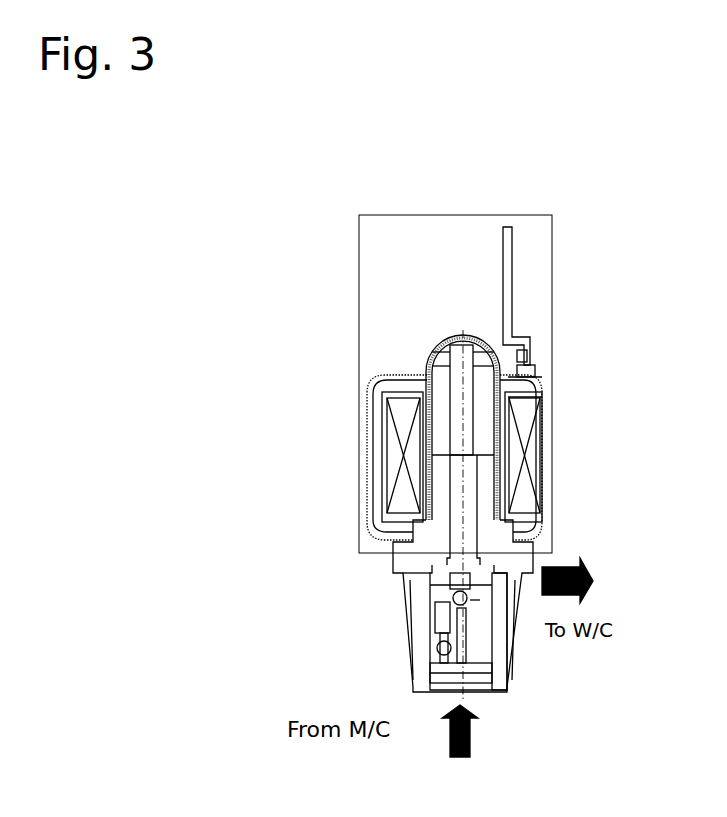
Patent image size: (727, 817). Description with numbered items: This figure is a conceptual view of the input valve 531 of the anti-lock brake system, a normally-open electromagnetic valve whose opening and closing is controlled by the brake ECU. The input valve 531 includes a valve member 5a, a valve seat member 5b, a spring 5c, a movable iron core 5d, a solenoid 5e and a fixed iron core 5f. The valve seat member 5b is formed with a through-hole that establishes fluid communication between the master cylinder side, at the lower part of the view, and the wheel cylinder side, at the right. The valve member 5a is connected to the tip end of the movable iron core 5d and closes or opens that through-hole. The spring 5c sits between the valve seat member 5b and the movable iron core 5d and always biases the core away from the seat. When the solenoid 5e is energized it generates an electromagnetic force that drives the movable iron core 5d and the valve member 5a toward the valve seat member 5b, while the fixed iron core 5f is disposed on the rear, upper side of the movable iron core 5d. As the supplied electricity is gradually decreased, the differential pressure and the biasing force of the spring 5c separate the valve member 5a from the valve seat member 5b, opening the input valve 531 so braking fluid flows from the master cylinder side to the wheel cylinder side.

The input valve 531 is at (342, 282).
The valve member 5a is at (472, 605).
The valve seat member 5b is at (477, 645).
The spring 5c is at (448, 585).
The movable iron core 5d is at (450, 528).
The solenoid 5e is at (393, 445).
The fixed iron core 5f is at (440, 385).